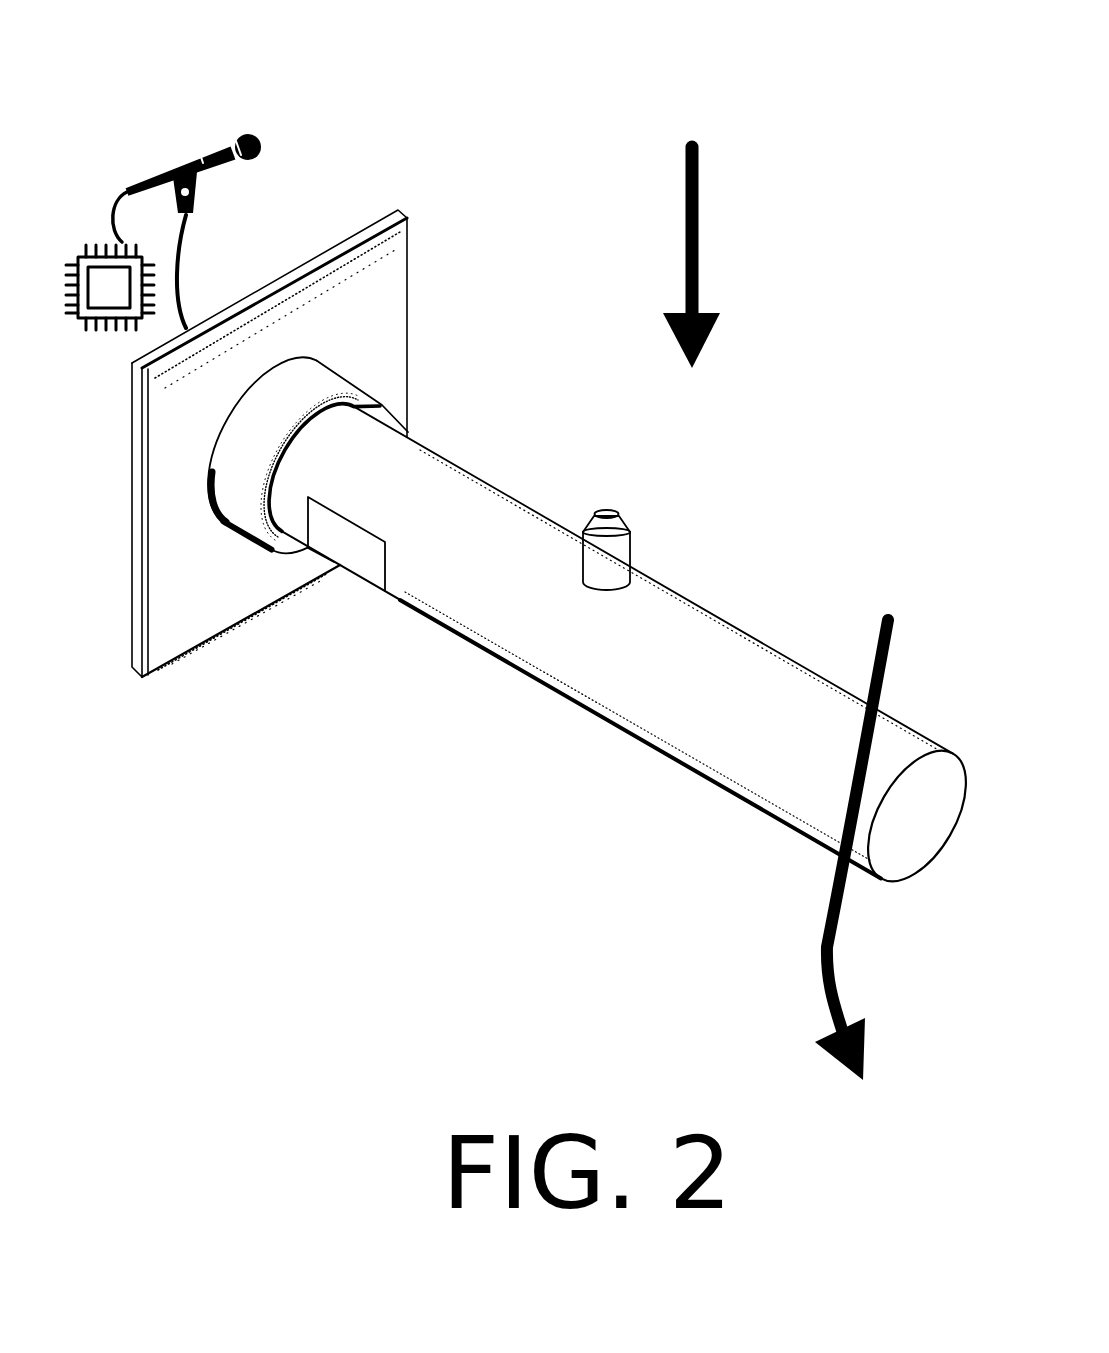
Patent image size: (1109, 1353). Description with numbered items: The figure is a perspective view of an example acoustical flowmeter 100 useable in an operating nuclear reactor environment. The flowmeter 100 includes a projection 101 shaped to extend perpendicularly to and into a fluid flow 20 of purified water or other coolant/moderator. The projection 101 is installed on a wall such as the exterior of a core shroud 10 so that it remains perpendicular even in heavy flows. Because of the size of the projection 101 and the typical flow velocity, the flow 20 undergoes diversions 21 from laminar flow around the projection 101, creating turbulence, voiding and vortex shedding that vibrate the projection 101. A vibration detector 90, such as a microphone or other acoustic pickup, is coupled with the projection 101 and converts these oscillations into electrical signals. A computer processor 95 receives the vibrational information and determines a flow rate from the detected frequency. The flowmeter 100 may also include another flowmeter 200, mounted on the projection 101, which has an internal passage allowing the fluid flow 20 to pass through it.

The core shroud 10 is at (348, 307).
The fluid flow 20 is at (697, 203).
The diversions 21 is at (837, 998).
The vibration detector 90 is at (200, 150).
The computer processor 95 is at (97, 328).
The acoustical flowmeter 100 is at (840, 568).
The projection 101 is at (707, 703).
The flowmeter 200 is at (603, 562).